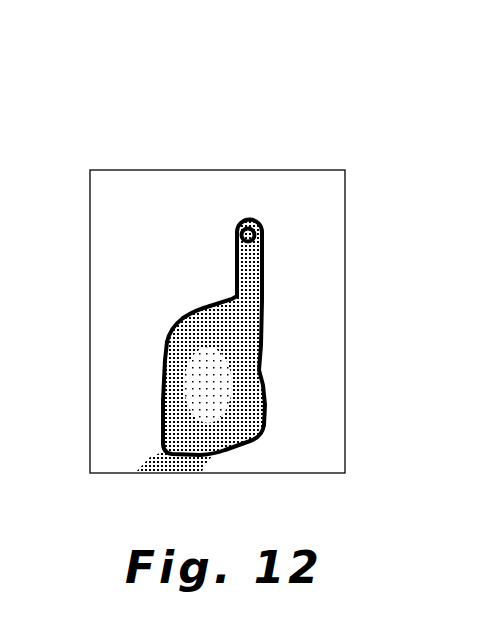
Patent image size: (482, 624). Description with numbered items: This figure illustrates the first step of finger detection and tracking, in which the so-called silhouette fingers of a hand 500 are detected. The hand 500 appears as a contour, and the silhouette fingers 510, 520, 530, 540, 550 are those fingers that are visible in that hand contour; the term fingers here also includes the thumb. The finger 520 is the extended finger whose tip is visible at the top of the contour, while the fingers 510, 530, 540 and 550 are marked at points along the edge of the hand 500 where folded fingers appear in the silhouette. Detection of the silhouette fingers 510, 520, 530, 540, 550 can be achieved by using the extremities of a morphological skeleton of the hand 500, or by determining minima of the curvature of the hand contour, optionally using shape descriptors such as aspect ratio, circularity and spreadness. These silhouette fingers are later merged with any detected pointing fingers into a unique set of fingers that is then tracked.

The hand 500 is at (265, 289).
The silhouette finger 510 is at (257, 396).
The silhouette finger 520 is at (250, 214).
The silhouette finger 530 is at (223, 344).
The silhouette finger 540 is at (192, 344).
The silhouette finger 550 is at (176, 355).